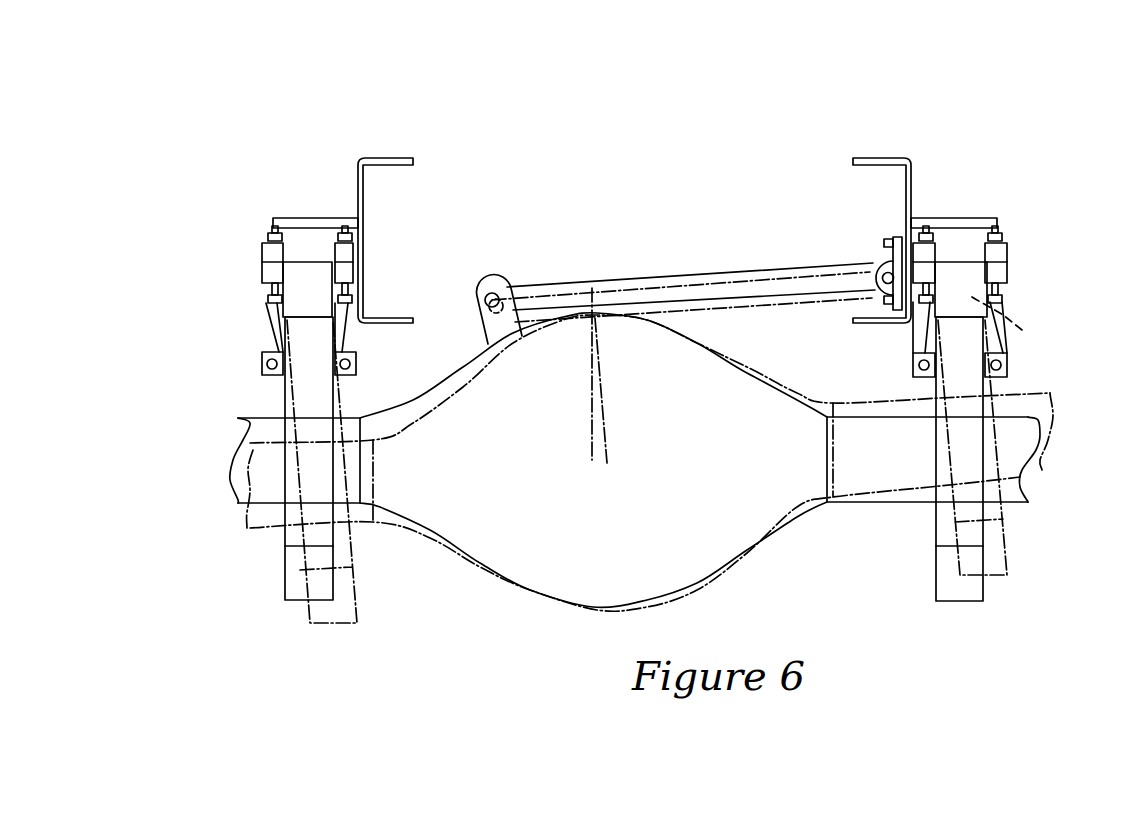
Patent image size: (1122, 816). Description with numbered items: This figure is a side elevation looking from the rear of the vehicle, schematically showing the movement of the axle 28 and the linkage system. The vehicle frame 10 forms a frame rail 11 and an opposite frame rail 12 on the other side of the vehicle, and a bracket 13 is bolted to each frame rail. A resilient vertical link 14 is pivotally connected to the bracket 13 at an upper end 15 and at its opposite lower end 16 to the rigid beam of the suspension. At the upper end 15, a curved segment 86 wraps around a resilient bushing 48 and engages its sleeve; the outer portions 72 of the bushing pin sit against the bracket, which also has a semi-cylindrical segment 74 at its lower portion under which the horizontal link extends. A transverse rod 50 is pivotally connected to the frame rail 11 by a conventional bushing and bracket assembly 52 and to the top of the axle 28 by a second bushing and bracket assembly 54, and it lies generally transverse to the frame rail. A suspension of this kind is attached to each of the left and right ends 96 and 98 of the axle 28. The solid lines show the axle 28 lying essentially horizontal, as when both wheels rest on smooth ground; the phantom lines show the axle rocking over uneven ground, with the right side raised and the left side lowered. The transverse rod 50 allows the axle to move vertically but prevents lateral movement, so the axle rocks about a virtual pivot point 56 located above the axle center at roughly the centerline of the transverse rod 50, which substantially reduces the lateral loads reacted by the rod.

The vehicle frame 10 is at (914, 201).
The frame rail 11 is at (908, 157).
The opposite frame rail 12 is at (358, 165).
The bracket 13 is at (305, 225).
The resilient vertical link 14 is at (634, 460).
The upper end 15 is at (968, 290).
The lower end 16 is at (964, 590).
The axle 28 is at (661, 474).
The resilient bushing 48 is at (1016, 325).
The transverse rod 50 is at (657, 278).
The bushing and bracket assembly 52 is at (888, 253).
The second bushing and bracket assembly 54 is at (487, 278).
The virtual pivot point 56 is at (592, 290).
The outer portions 72 is at (270, 288).
The semi-cylindrical segment 74 is at (282, 347).
The curved segment 86 is at (297, 267).
The left end 96 is at (250, 420).
The right end 98 is at (1010, 485).